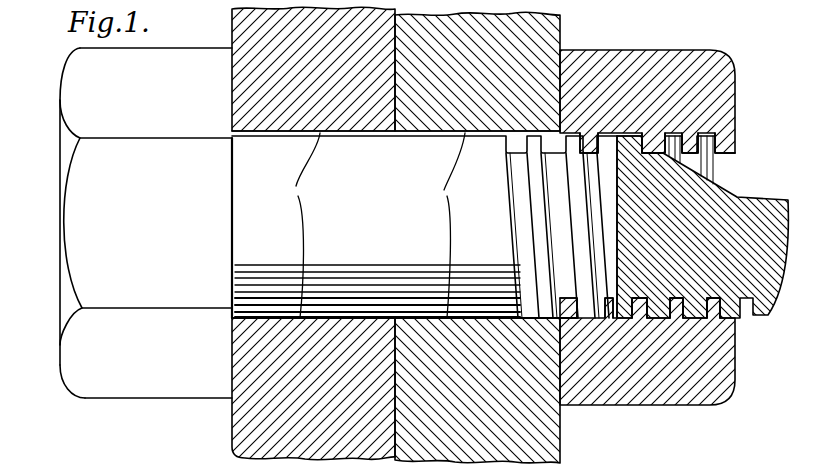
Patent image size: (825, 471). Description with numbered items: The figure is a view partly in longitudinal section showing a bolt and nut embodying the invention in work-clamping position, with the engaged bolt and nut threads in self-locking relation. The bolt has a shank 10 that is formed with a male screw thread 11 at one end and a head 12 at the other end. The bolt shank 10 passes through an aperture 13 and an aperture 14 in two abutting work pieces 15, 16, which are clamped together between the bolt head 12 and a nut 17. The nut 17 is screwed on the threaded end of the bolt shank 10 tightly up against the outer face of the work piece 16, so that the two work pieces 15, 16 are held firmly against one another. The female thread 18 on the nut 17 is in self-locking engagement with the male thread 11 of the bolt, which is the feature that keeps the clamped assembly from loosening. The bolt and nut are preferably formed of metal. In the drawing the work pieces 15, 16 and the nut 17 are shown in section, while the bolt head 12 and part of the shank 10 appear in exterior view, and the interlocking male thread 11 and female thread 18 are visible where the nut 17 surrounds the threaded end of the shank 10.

The shank 10 is at (757, 191).
The male screw thread 11 is at (577, 221).
The head 12 is at (87, 322).
The aperture 13 is at (295, 225).
The aperture 14 is at (445, 225).
The work piece 15 is at (232, 28).
The work piece 16 is at (543, 37).
The nut 17 is at (700, 68).
The female thread 18 is at (737, 160).